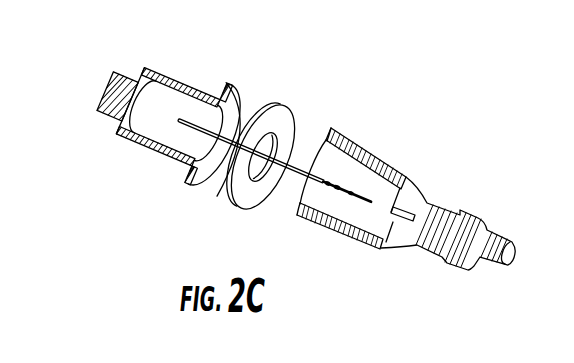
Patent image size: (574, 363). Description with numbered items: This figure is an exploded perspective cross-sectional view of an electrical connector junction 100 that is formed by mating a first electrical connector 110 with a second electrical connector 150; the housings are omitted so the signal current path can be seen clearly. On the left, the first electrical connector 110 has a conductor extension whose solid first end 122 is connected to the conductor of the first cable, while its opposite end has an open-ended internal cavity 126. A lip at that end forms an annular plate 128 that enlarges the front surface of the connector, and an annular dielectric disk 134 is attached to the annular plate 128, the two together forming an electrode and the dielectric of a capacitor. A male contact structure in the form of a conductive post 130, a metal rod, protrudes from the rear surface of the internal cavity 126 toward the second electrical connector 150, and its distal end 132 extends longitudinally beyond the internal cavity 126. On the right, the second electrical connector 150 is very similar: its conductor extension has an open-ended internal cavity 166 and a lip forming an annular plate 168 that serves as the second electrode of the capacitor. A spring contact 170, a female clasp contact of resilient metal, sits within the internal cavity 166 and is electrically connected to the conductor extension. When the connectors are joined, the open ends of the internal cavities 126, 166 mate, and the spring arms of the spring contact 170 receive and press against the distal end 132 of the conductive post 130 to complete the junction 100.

The electrical connector junction 100 is at (420, 62).
The first electrical connector 110 is at (171, 42).
The first end 122 is at (97, 112).
The internal cavity 126 is at (188, 117).
The annular plate 128 is at (240, 103).
The conductive post 130 is at (226, 184).
The distal end 132 is at (299, 207).
The annular dielectric disk 134 is at (283, 107).
The second electrical connector 150 is at (420, 138).
The internal cavity 166 is at (357, 182).
The annular plate 168 is at (330, 128).
The spring contact 170 is at (372, 203).